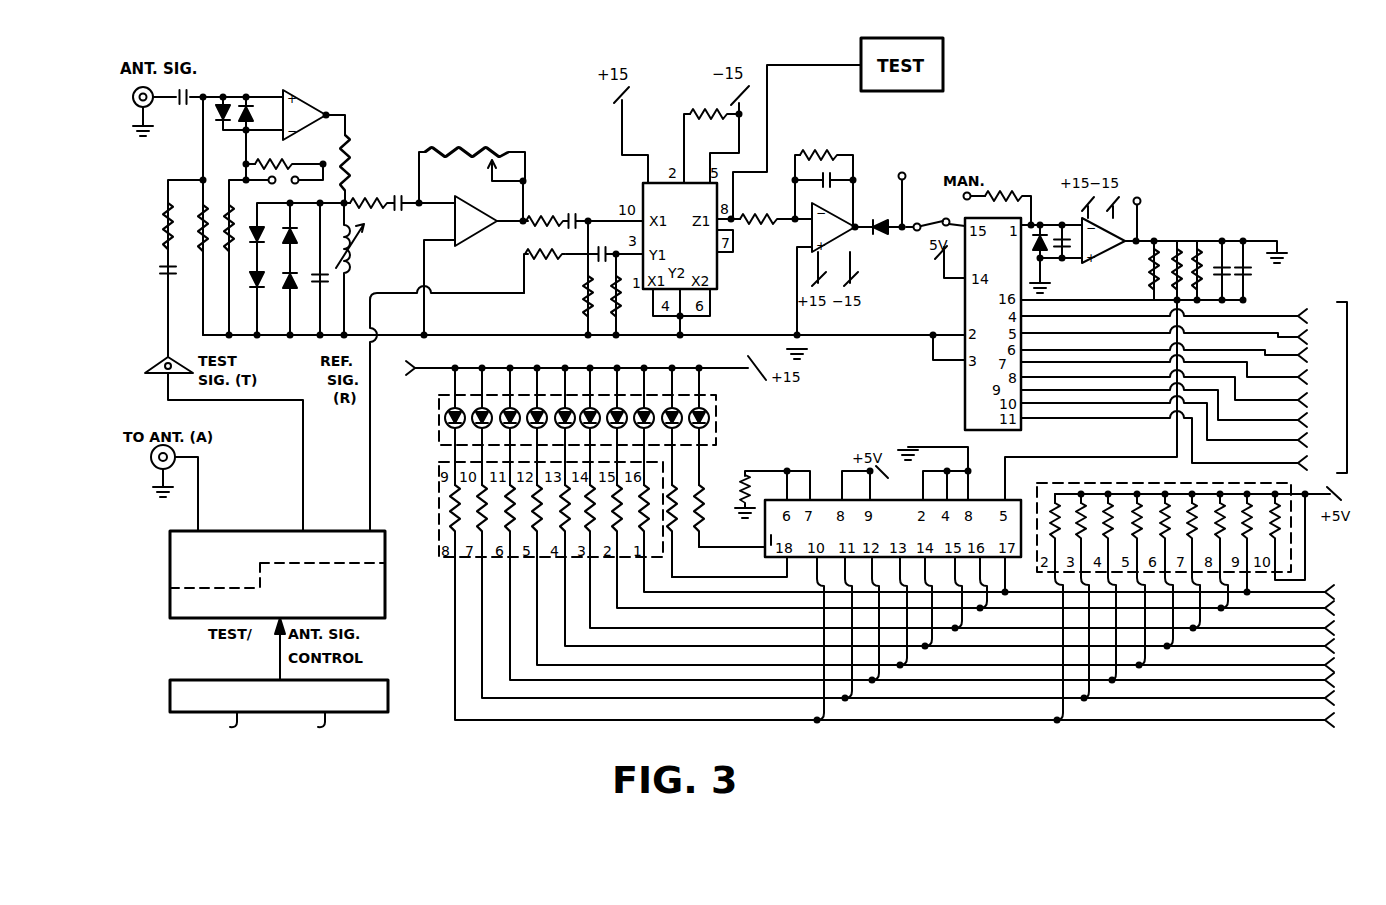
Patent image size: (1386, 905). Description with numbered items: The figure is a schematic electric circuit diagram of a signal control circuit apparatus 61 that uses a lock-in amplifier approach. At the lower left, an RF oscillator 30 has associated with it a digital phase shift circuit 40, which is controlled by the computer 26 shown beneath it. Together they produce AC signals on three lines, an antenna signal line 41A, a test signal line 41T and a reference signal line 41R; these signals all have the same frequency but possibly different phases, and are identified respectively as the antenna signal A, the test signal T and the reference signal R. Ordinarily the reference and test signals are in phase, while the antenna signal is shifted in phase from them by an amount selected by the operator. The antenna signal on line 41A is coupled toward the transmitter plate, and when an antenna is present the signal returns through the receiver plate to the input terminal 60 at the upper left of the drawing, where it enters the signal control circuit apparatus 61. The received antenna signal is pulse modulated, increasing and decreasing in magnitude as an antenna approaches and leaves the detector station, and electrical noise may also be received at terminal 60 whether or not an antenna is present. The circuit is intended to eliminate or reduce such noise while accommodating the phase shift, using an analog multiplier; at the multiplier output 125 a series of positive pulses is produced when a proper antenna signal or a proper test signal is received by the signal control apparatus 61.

The input terminal 60 is at (130, 94).
The signal control circuit apparatus 61 is at (498, 124).
The output of analog multiplier 125 is at (733, 217).
The antenna signal line 41A is at (201, 494).
The test signal line 41T is at (305, 470).
The reference signal line 41R is at (372, 460).
The RF oscillator 30 is at (385, 556).
The digital phase shift circuit 40 is at (385, 581).
The computer 26 is at (391, 703).